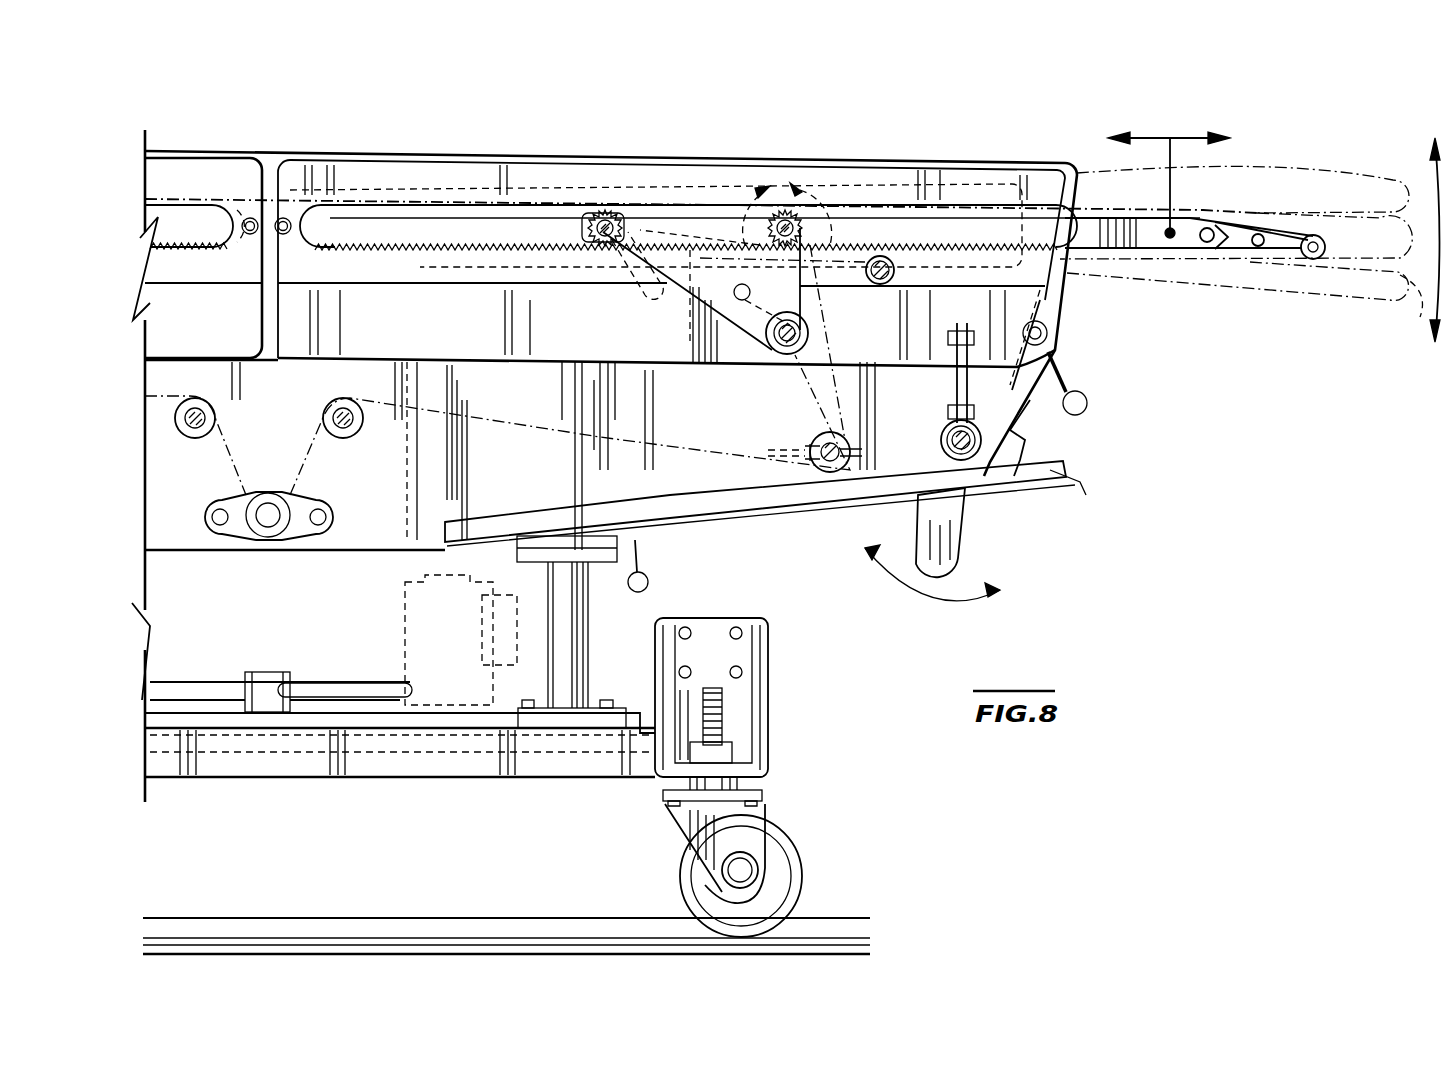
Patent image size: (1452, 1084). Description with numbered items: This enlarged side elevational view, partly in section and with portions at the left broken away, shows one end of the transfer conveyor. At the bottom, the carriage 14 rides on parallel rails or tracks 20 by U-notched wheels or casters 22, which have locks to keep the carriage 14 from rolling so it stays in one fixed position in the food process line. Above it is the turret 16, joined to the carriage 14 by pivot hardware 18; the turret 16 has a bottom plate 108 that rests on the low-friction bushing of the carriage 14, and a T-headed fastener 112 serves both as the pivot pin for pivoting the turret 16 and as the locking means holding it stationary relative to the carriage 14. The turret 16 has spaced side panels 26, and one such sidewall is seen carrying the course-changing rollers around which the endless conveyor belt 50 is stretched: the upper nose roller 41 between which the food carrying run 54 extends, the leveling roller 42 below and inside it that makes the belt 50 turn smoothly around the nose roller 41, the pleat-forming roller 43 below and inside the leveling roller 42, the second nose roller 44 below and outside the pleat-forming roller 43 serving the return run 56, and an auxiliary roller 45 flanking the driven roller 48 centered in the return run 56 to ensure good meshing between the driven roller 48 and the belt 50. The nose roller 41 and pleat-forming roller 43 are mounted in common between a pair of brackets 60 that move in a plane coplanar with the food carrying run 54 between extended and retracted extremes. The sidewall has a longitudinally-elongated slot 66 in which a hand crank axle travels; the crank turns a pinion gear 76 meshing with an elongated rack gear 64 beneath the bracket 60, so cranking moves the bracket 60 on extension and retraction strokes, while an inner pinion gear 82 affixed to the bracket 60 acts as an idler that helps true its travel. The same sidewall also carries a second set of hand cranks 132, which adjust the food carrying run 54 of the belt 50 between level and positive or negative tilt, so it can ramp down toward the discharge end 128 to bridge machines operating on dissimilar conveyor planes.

The carriage 14 is at (555, 778).
The turret 16 is at (588, 648).
The pivot hardware 18 is at (262, 677).
The rails or tracks 20 is at (295, 916).
The U-notched wheels or casters 22 is at (795, 838).
The side panels 26 is at (729, 437).
The nose rollers 41 is at (1318, 259).
The leveling rollers 42 is at (888, 285).
The pleat-forming rollers 43 is at (810, 328).
The second pair of nose rollers 44 is at (840, 448).
The auxiliary rollers 45 is at (348, 440).
The driven roller 48 is at (262, 532).
The endless conveyor belt 50 is at (1273, 170).
The food carrying run 54 is at (1238, 196).
The return run 56 is at (503, 415).
The brackets 60 is at (880, 235).
The rack gears 64 is at (445, 242).
The slots 66 is at (360, 222).
The pinion gears 76 is at (765, 218).
The inner pinion gear 82 is at (605, 215).
The bottom plate 108 is at (363, 718).
The T-headed fastener 112 is at (168, 680).
The discharge end 128 is at (1412, 310).
The second set of hand cranks 132 is at (965, 540).